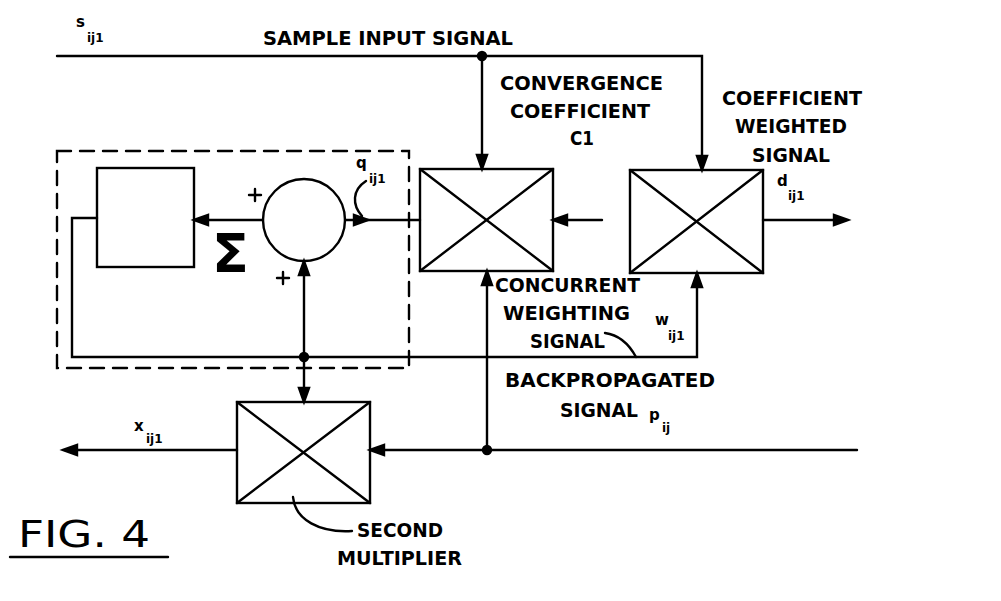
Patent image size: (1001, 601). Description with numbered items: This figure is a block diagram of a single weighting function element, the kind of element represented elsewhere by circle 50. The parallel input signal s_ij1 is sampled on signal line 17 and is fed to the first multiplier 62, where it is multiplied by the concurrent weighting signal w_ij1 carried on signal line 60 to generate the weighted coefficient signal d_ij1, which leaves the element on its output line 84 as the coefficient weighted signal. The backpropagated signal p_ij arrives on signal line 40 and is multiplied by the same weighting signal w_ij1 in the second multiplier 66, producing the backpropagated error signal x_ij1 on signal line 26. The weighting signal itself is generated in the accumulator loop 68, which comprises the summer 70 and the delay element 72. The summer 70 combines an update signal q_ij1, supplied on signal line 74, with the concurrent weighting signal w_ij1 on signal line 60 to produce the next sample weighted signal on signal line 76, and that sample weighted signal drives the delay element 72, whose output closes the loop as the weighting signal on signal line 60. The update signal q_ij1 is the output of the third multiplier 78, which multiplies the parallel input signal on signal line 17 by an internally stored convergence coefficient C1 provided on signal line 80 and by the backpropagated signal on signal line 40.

The signal line 17 is at (145, 56).
The circle 50 is at (560, 44).
The third multiplier 78 is at (458, 166).
The signal line 80 is at (592, 219).
The first multiplier 62 is at (745, 233).
The coefficient weighted signal output 84 is at (795, 222).
The accumulator loop 68 is at (160, 151).
The delay element 72 is at (186, 256).
The summer 70 is at (323, 182).
The signal line 76 is at (240, 214).
The signal line 74 is at (392, 222).
The signal line 60 is at (107, 357).
The second multiplier 66 is at (353, 428).
The signal line 26 is at (118, 449).
The signal line 40 is at (678, 453).